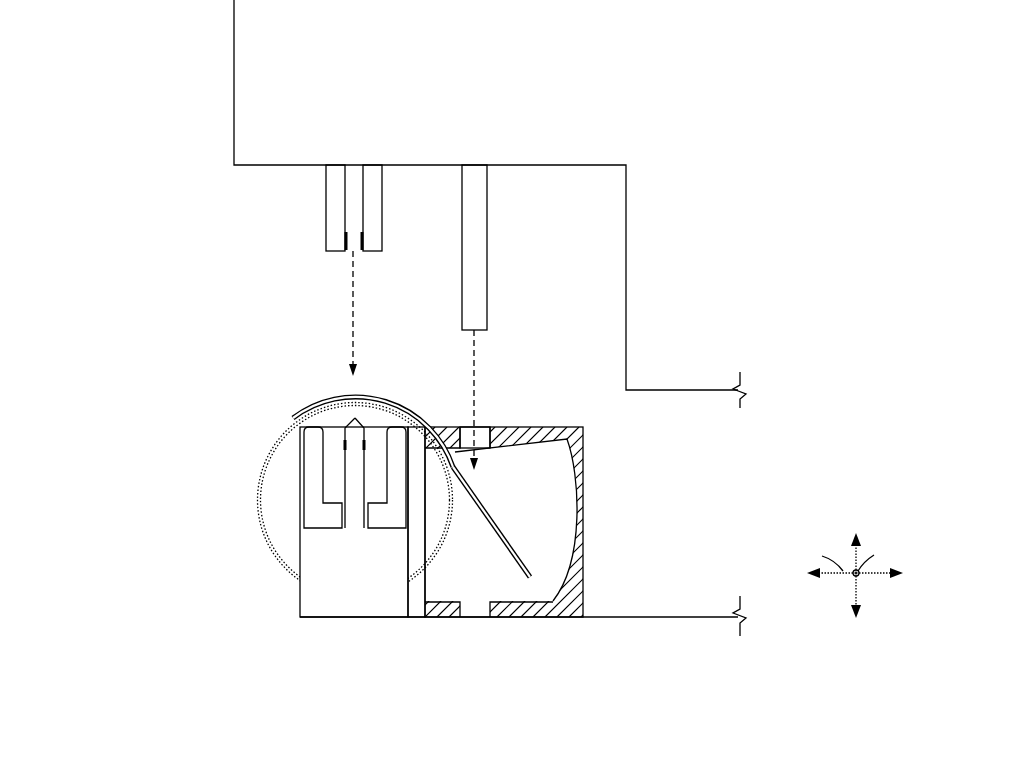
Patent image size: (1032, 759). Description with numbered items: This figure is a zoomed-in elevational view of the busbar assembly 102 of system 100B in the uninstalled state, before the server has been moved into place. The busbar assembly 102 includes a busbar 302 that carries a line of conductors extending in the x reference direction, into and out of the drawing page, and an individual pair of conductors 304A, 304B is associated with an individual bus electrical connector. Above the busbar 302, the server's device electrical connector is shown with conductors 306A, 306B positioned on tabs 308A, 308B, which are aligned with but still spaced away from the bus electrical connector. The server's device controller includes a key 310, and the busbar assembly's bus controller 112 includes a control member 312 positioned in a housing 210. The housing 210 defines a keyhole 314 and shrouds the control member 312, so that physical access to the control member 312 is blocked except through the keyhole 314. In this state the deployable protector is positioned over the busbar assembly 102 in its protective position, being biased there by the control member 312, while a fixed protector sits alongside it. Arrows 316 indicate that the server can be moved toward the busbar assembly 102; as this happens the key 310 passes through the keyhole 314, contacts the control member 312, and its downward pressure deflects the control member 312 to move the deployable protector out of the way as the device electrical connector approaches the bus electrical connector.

The system 100B is at (177, 17).
The tab 308A is at (325, 195).
The tab 308B is at (383, 192).
The conductor 306A is at (347, 252).
The conductor 306B is at (362, 252).
The key 310 is at (487, 242).
The arrows 316 is at (352, 335).
The busbar assembly 102 is at (296, 636).
The busbar 302 is at (300, 597).
The conductor 304A is at (345, 443).
The conductor 304B is at (365, 441).
The housing 210 is at (561, 617).
The keyhole 314 is at (490, 427).
The bus controller 112 is at (556, 468).
The control member 312 is at (486, 510).